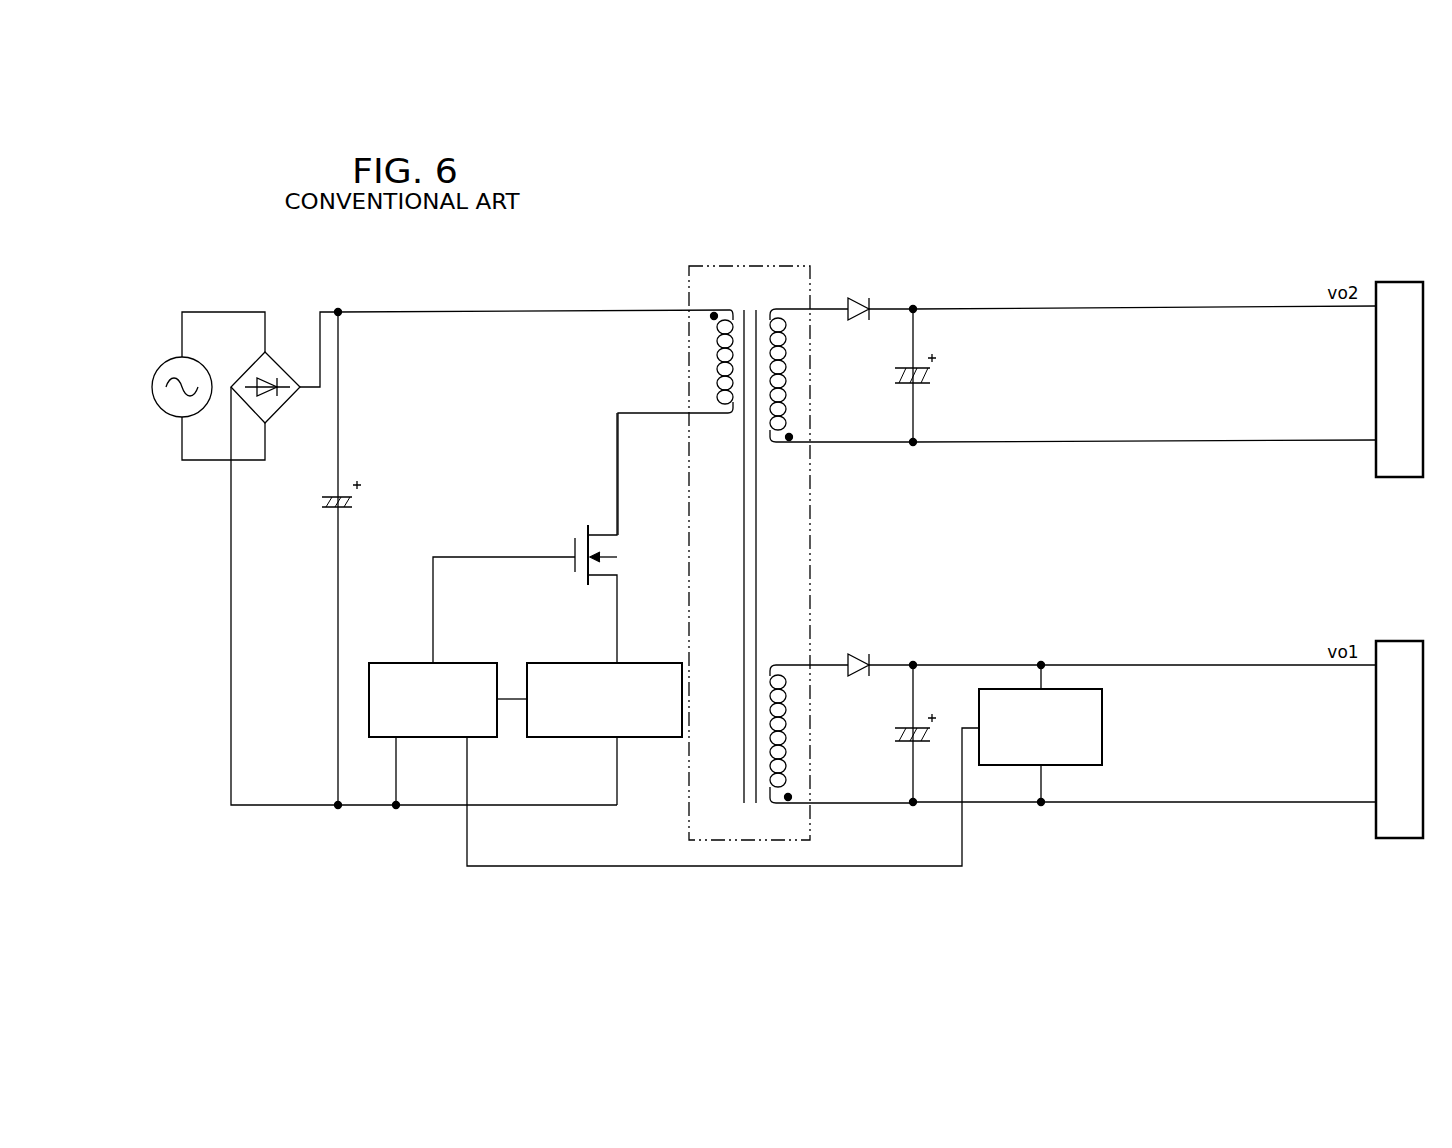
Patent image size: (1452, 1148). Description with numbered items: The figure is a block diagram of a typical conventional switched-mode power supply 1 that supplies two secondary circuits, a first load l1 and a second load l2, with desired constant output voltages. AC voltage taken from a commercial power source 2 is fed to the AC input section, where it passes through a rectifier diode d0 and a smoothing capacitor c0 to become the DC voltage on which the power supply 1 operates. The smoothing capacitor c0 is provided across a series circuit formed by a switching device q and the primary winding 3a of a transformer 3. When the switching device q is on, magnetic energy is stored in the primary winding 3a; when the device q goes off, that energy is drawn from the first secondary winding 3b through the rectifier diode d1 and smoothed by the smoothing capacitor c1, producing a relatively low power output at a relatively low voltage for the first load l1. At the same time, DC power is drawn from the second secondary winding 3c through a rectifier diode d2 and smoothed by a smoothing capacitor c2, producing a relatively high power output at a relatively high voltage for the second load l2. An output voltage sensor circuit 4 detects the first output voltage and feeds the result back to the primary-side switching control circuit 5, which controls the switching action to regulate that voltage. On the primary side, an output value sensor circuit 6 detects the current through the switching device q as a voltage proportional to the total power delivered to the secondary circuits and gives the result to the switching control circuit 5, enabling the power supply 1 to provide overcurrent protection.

The switched-mode power supply 1 is at (211, 238).
The commercial power source 2 is at (166, 362).
The rectifier diode d0 is at (276, 354).
The smoothing capacitor c0 is at (326, 497).
The transformer 3 is at (746, 266).
The primary winding 3a is at (717, 365).
The first secondary winding 3b is at (786, 715).
The second secondary winding 3c is at (786, 357).
The switching device q is at (587, 528).
The switching control circuit 5 is at (395, 663).
The output value sensor circuit 6 is at (572, 663).
The rectifier diode d1 is at (858, 653).
The smoothing capacitor c1 is at (896, 746).
The rectifier diode d2 is at (858, 296).
The smoothing capacitor c2 is at (897, 388).
The output voltage sensor circuit 4 is at (1105, 722).
The first load l1 is at (1397, 641).
The second load l2 is at (1397, 282).